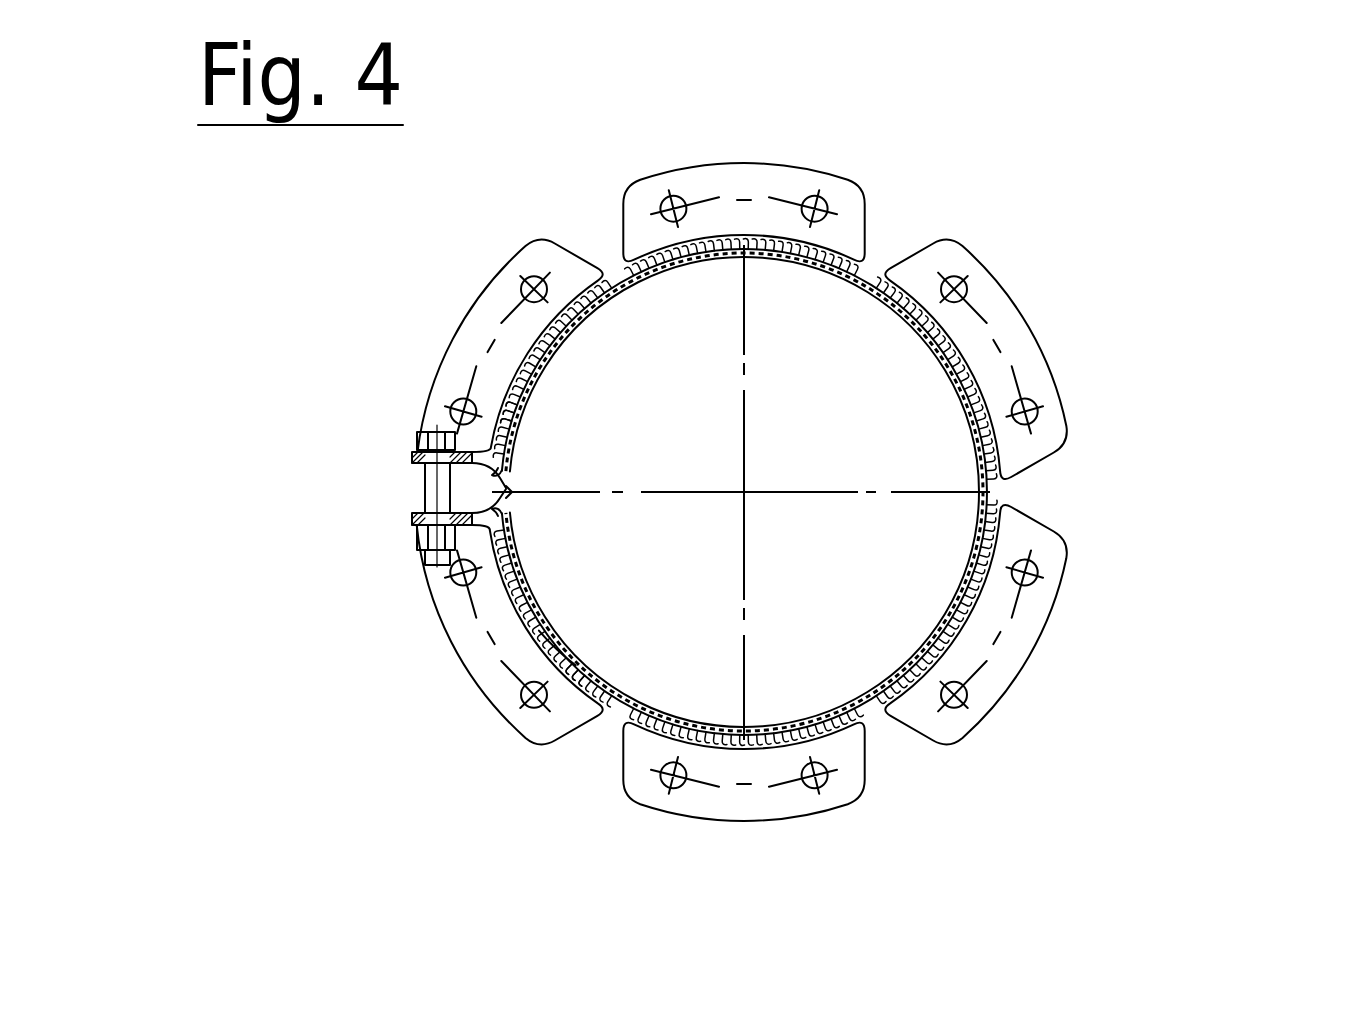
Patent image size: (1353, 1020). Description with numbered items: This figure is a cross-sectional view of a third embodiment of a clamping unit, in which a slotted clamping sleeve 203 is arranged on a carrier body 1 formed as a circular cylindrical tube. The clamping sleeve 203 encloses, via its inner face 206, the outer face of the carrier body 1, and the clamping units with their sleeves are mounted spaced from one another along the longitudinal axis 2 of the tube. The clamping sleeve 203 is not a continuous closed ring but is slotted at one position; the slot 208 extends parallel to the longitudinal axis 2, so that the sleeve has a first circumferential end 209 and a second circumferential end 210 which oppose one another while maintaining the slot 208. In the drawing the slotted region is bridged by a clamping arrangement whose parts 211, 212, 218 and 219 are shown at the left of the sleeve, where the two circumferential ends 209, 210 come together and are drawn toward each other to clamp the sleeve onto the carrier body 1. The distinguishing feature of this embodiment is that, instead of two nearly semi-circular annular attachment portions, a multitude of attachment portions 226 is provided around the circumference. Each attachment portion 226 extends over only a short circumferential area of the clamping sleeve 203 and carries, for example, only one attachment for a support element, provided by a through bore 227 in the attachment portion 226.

The carrier body 1 is at (647, 275).
The longitudinal axis 2 is at (745, 490).
The clamping sleeve 203 is at (993, 493).
The inner face 206 is at (952, 602).
The slot 208 is at (512, 489).
The first circumferential end 209 is at (510, 484).
The second circumferential end 210 is at (511, 496).
The band segment 211 is at (548, 640).
The strap connecting portions 212 is at (518, 375).
The clamping bolt 218 is at (419, 434).
The clamping nut 219 is at (417, 543).
The attachment portions 226 is at (782, 180).
The bore 227 is at (700, 766).